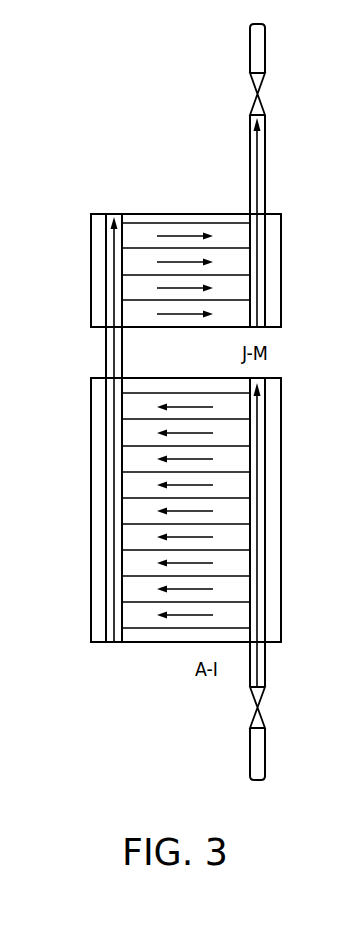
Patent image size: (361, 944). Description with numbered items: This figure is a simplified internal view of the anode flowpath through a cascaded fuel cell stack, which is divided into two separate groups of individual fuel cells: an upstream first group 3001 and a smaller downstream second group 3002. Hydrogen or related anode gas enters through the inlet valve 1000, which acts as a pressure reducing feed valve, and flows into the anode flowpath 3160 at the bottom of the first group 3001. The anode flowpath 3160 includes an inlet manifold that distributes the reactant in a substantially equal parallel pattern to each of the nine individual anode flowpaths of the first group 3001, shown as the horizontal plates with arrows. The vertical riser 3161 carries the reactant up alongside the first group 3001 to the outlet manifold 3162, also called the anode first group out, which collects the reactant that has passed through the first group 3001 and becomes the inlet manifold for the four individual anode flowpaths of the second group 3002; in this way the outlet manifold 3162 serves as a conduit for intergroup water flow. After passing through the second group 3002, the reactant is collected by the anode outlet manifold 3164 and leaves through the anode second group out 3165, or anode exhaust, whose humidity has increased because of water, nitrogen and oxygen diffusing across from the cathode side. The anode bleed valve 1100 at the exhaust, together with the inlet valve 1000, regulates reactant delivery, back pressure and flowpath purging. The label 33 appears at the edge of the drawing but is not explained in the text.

The first group 3001 is at (281, 477).
The second group 3002 is at (281, 277).
The anode flowpath 3160 is at (265, 660).
The riser pipe in first block 3161 is at (265, 545).
The outlet manifold 3162 is at (106, 458).
The anode outlet manifold 3164 is at (265, 262).
The anode second group out 3165 is at (265, 178).
The inlet valve 1000 is at (259, 707).
The anode bleed valve 1100 is at (259, 95).
The heat exchanger 33 is at (349, 402).